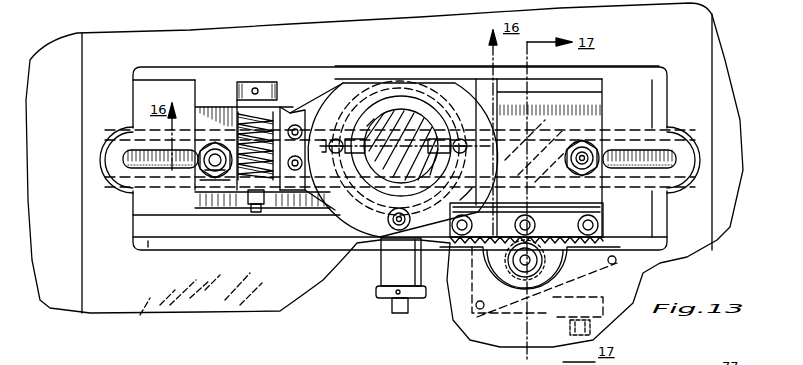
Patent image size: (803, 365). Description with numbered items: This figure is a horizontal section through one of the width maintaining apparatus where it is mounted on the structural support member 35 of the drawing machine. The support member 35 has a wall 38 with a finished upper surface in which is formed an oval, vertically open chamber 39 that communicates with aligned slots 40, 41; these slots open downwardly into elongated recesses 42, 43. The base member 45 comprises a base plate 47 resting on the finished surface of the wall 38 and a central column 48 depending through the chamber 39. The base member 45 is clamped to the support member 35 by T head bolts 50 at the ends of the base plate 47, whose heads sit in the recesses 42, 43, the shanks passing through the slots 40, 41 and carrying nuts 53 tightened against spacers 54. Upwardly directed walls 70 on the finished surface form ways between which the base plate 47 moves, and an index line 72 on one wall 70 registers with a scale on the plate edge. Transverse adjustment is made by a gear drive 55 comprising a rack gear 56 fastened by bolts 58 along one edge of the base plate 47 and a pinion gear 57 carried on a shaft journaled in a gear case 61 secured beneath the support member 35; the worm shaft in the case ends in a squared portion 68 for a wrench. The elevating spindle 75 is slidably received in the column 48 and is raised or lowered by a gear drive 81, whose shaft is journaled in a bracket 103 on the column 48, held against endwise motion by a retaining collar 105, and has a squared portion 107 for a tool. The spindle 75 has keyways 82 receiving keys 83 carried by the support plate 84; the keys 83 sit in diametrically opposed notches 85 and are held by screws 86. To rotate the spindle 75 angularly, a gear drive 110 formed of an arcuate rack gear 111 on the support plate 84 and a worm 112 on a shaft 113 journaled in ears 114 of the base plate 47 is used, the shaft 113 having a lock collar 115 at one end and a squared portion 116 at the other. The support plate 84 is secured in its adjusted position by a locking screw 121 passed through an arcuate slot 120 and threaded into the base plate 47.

The structural support member 35 is at (110, 62).
The wall 38 is at (140, 300).
The oval vertically open chamber 39 is at (352, 248).
The slot 40 is at (138, 157).
The slot 41 is at (655, 150).
The elongated recess 42 is at (122, 190).
The elongated recess 43 is at (672, 190).
The base member 45 is at (203, 82).
The base plate 47 is at (220, 100).
The column 48 is at (432, 80).
The T head bolts 50 is at (212, 170).
The nuts 53 is at (218, 172).
The spacers 54 is at (232, 180).
The gear drive 55 is at (500, 258).
The rack gear 56 is at (560, 237).
The pinion gear 57 is at (540, 262).
The bolts 58 is at (515, 225).
The gear case 61 is at (556, 312).
The squared shaft end 68 is at (592, 328).
The walls 70 is at (148, 247).
The index line 72 is at (295, 243).
The elevating spindle 75 is at (392, 125).
The gear drive 81 is at (400, 315).
The keyways 82 is at (358, 135).
The keys 83 is at (352, 154).
The support plate 84 is at (350, 83).
The notches 85 is at (344, 149).
The screws 86 is at (334, 139).
The bracket 103 is at (418, 282).
The retaining collar 105 is at (378, 287).
The squared portion 107 is at (393, 308).
The gear drive 110 is at (248, 185).
The arcuate rack gear 111 is at (287, 105).
The worm 112 is at (307, 200).
The shaft 113 is at (287, 195).
The ears 114 is at (244, 105).
The lock collar 115 is at (268, 84).
The squared portion 116 is at (258, 206).
The arcuate slot 120 is at (455, 191).
The locking screw 121 is at (400, 240).